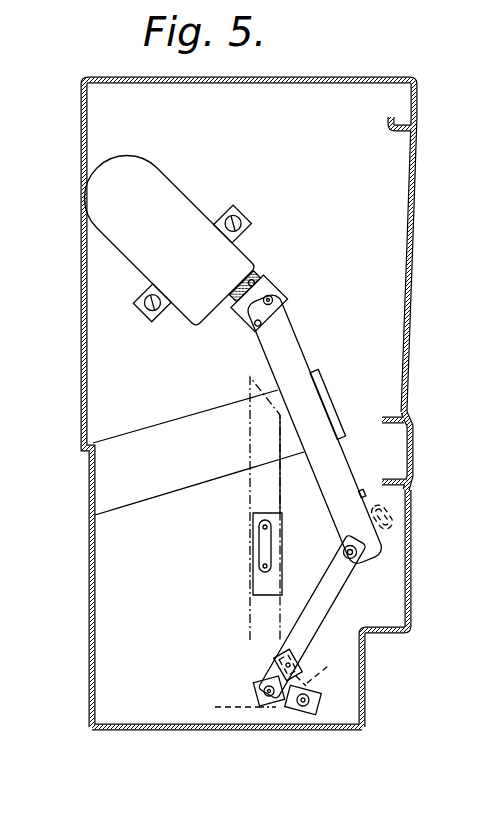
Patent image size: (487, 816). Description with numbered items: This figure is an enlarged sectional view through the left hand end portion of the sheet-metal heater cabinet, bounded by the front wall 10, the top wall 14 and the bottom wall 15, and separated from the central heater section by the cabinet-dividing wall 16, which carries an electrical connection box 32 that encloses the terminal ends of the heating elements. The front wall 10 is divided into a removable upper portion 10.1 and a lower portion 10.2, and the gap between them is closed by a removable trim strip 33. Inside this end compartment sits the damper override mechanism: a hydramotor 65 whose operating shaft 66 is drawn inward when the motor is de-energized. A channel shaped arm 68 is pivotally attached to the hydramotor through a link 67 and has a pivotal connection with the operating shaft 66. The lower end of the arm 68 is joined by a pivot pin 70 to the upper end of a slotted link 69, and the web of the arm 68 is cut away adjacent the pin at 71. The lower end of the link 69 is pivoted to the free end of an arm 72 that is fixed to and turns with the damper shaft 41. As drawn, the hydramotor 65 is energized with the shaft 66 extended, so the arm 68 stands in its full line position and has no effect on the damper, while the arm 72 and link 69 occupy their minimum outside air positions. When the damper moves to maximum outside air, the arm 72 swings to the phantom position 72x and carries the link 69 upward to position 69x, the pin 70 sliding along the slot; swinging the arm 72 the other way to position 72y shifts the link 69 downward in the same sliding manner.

The front wall 10 is at (419, 216).
The upper portion 10.1 is at (413, 260).
The lower portion 10.2 is at (412, 610).
The top wall 14 is at (274, 77).
The bottom wall 15 is at (195, 734).
The dividing wall 16 is at (100, 116).
The electrical connection box 32 is at (178, 489).
The trim strip 33 is at (414, 452).
The damper shaft 41 is at (305, 708).
The hydramotor 65 is at (201, 195).
The operating shaft 66 is at (246, 314).
The link 67 is at (266, 286).
The channel shaped arm 68 is at (306, 349).
The slotted link 69 is at (333, 620).
The slotted link upward position 69x is at (408, 507).
The pivot pin 70 is at (344, 553).
The cut-away portion 71 is at (363, 494).
The arm 72 is at (283, 706).
The arm maximum outside air position 72x is at (336, 669).
The arm closed outside air position 72y is at (225, 710).